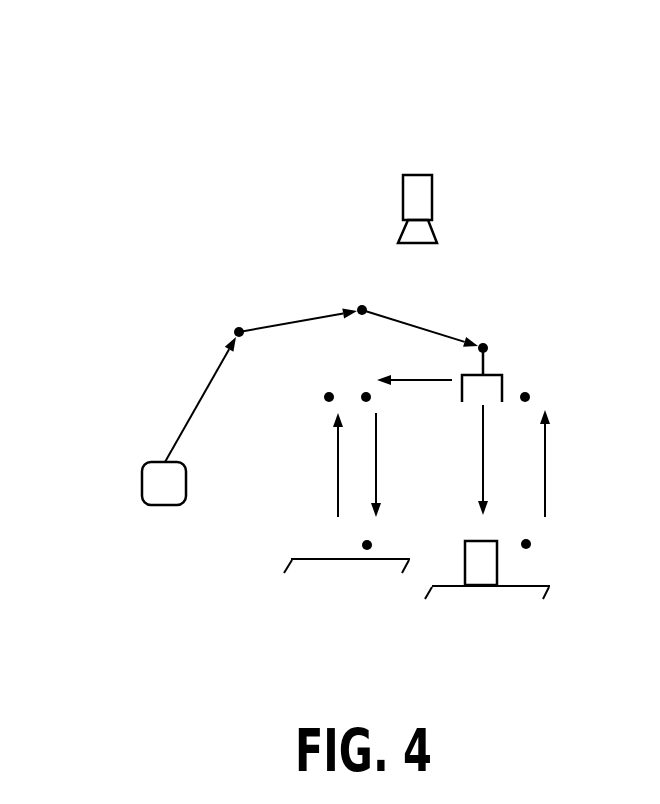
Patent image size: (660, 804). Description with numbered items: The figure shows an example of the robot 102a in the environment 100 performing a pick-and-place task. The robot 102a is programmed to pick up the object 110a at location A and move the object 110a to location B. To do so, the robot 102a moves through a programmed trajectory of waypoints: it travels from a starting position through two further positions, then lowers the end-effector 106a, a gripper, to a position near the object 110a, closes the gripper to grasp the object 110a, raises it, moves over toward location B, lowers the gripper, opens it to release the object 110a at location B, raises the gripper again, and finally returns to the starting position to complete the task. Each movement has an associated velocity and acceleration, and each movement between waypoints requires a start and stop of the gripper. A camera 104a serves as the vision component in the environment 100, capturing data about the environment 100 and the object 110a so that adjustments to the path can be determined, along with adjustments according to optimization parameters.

The environment 100 is at (177, 83).
The robot 102a is at (163, 506).
The camera 104a is at (412, 173).
The end-effector 106a is at (497, 375).
The object 110a is at (465, 562).